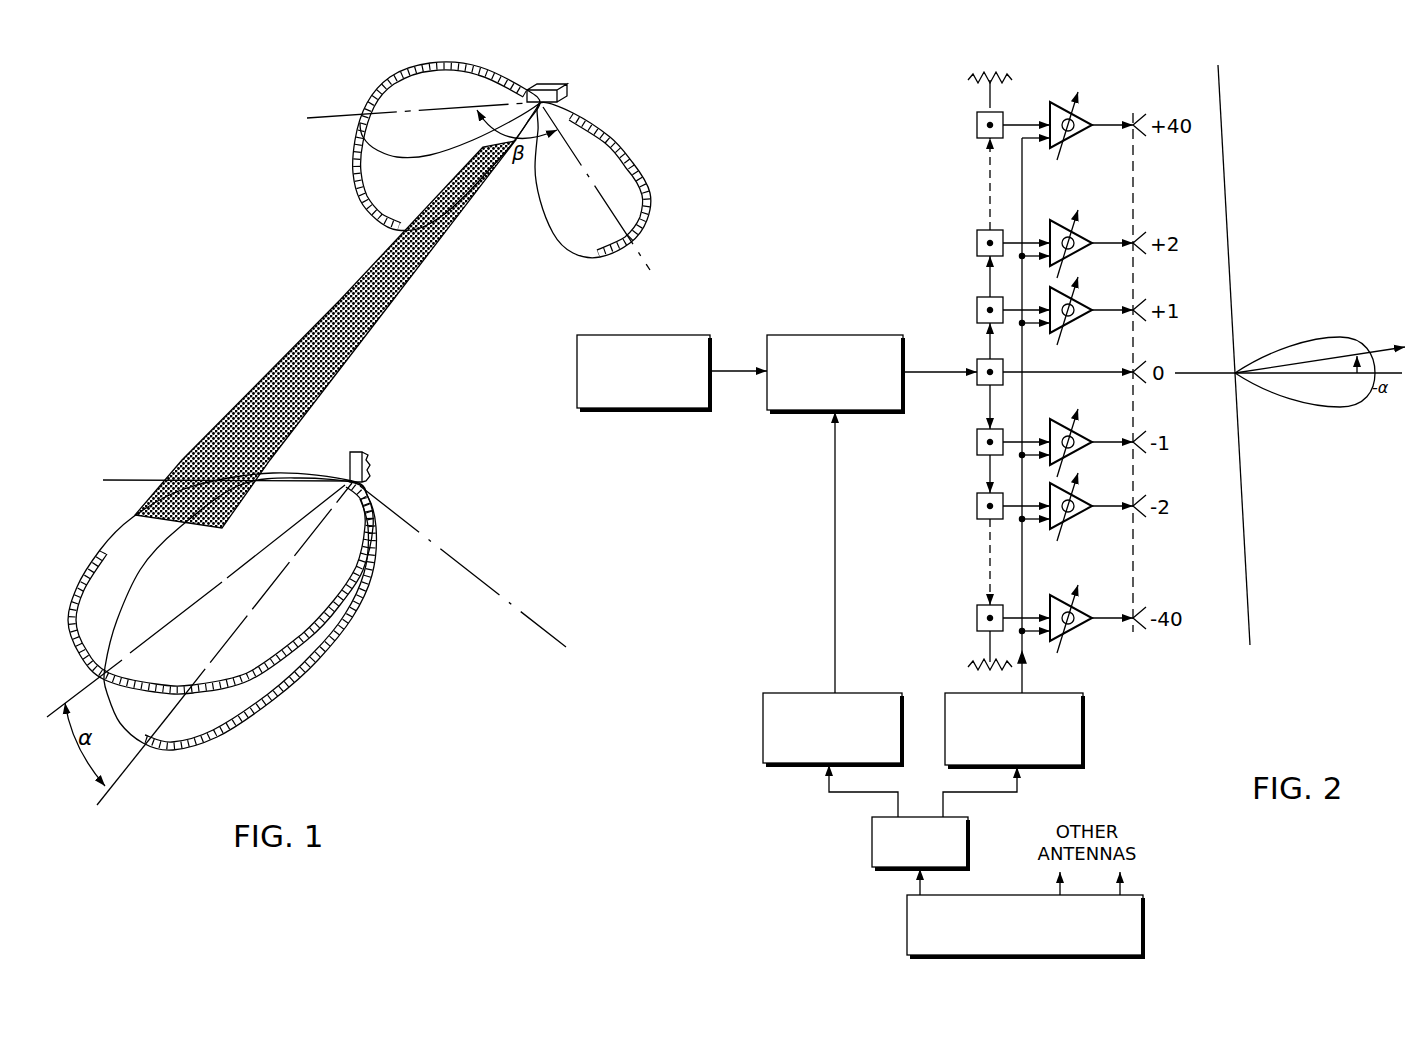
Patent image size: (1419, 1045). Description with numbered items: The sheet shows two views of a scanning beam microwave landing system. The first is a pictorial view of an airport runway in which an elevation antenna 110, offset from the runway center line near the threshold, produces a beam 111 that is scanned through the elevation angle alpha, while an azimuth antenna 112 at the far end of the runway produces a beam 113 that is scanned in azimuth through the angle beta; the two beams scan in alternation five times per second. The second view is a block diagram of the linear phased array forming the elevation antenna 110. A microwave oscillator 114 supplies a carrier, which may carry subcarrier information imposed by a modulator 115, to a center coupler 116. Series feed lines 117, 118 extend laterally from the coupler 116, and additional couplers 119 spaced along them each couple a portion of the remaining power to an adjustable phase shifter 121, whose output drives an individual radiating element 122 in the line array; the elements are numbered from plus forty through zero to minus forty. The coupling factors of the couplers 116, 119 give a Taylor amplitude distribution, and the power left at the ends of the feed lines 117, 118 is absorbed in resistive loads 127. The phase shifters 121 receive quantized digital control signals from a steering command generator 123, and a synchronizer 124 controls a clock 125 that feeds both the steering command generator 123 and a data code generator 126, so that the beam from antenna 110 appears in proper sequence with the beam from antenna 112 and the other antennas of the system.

In FIG. 1, the elevation antenna 110 is at (370, 458).
In FIG. 2, the elevation antenna 110 is at (944, 371).
In FIG. 1, the beam 111 is at (340, 640).
In FIG. 1, the azimuth antenna 112 is at (557, 85).
In FIG. 1, the beam 113 is at (623, 130).
In FIG. 2, the microwave oscillator 114 is at (652, 410).
In FIG. 2, the modulator 115 is at (798, 412).
In FIG. 2, the coupler 116 is at (975, 383).
In FIG. 2, the series feed line 117 is at (985, 278).
In FIG. 2, the series feed line 118 is at (980, 462).
In FIG. 2, the coupler 119 is at (977, 310).
In FIG. 2, the adjustable phase shifter 121 is at (1058, 222).
In FIG. 2, the radiating element 122 is at (1137, 115).
In FIG. 2, the steering command generator 123 is at (1085, 730).
In FIG. 2, the synchronizer 124 is at (1145, 918).
In FIG. 2, the clock 125 is at (872, 838).
In FIG. 2, the data code generator 126 is at (890, 676).
In FIG. 2, the resistive load 127 is at (975, 76).